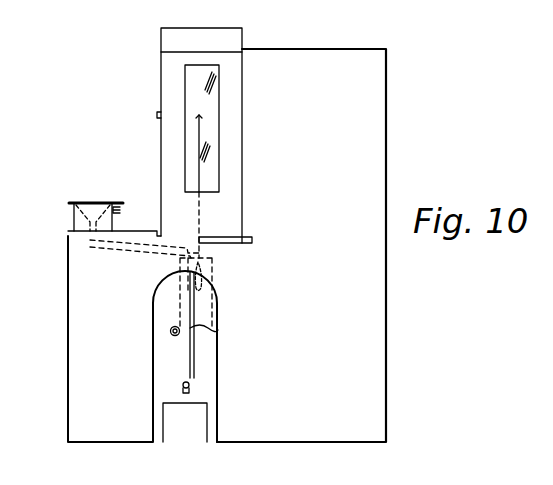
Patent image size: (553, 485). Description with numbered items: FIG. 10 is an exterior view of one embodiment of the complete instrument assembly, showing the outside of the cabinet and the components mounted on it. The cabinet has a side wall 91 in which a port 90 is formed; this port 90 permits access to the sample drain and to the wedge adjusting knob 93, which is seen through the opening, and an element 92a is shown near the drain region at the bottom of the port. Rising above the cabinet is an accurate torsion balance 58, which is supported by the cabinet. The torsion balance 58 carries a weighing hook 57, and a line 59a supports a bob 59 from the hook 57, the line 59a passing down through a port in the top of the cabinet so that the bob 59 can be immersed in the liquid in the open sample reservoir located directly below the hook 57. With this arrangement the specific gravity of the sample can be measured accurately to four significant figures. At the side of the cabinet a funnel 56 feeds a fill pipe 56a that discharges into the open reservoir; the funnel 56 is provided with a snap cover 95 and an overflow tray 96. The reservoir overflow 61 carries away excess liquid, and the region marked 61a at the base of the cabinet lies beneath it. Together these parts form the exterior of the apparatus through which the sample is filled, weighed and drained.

The funnel 56 is at (74, 218).
The fill pipe 56a is at (133, 248).
The weighing hook 57 is at (200, 117).
The torsion balance 58 is at (161, 78).
The bob 59 is at (206, 270).
The line 59a is at (200, 157).
The overflow 61 is at (190, 352).
The receptacle 61a is at (203, 432).
The port 90 is at (217, 362).
The side wall 91 is at (372, 381).
The knob 92a is at (192, 389).
The wedge adjusting knob 93 is at (170, 331).
The snap cover 95 is at (92, 204).
The overflow tray 96 is at (137, 232).